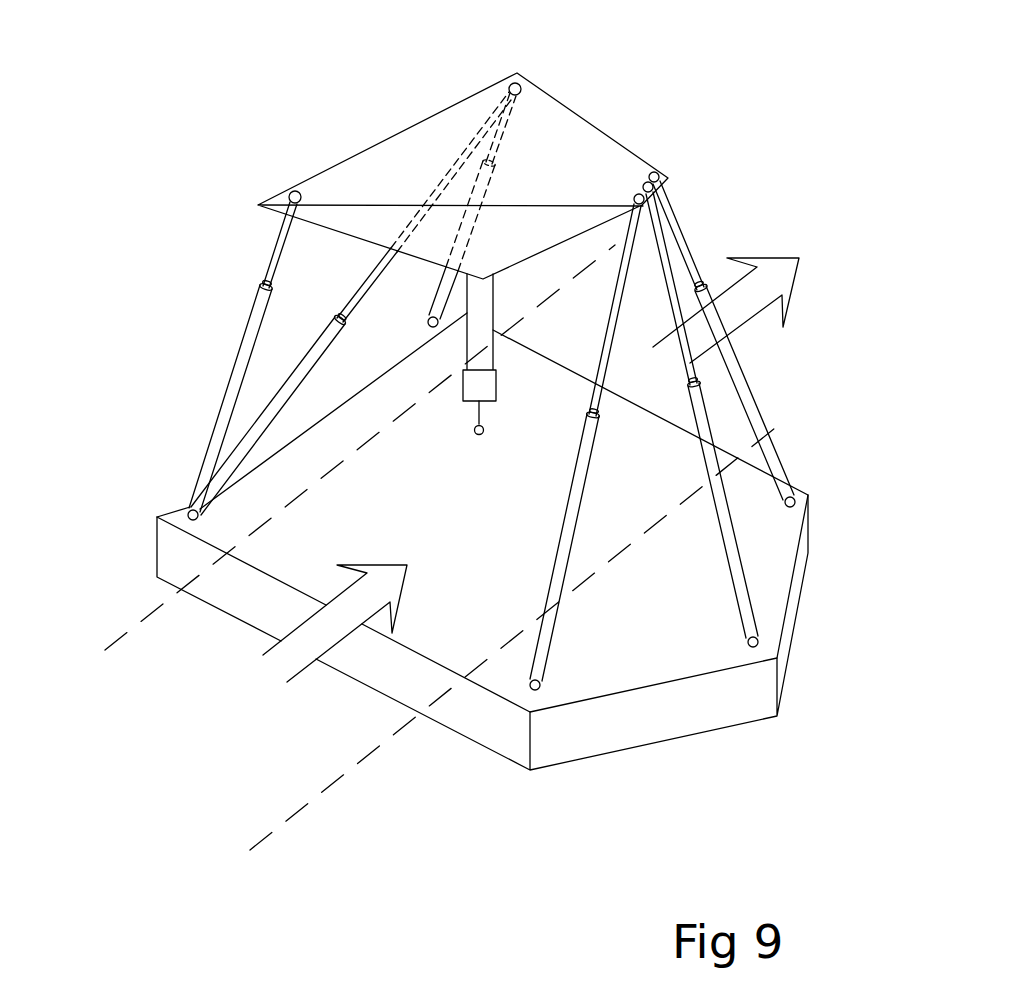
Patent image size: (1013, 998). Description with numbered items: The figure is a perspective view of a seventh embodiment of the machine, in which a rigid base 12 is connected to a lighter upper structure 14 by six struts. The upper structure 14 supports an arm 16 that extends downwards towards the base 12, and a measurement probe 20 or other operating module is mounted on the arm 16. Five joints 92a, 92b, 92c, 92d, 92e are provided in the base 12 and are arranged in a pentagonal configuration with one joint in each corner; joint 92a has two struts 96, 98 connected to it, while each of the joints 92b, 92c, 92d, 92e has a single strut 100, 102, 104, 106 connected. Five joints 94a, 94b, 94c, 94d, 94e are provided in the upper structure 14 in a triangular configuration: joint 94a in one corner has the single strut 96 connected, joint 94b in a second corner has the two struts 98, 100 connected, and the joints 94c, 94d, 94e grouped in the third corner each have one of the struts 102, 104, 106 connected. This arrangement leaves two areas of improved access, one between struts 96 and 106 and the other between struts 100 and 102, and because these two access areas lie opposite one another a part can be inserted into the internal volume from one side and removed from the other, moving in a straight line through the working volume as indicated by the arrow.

The base 12 is at (157, 545).
The upper structure 14 is at (385, 157).
The arm 16 is at (512, 336).
The measurement probe 20 is at (490, 420).
The joint 92a is at (189, 510).
The joint 92b is at (428, 321).
The joint 92c is at (797, 499).
The joint 92d is at (760, 643).
The joint 92e is at (540, 690).
The joint 94a is at (289, 197).
The joint 94b is at (508, 87).
The joint 94c is at (653, 172).
The joint 94d is at (654, 188).
The joint 94e is at (645, 201).
The strut 96 is at (231, 360).
The strut 98 is at (320, 348).
The strut 100 is at (473, 228).
The strut 102 is at (758, 383).
The strut 104 is at (707, 447).
The strut 106 is at (578, 497).